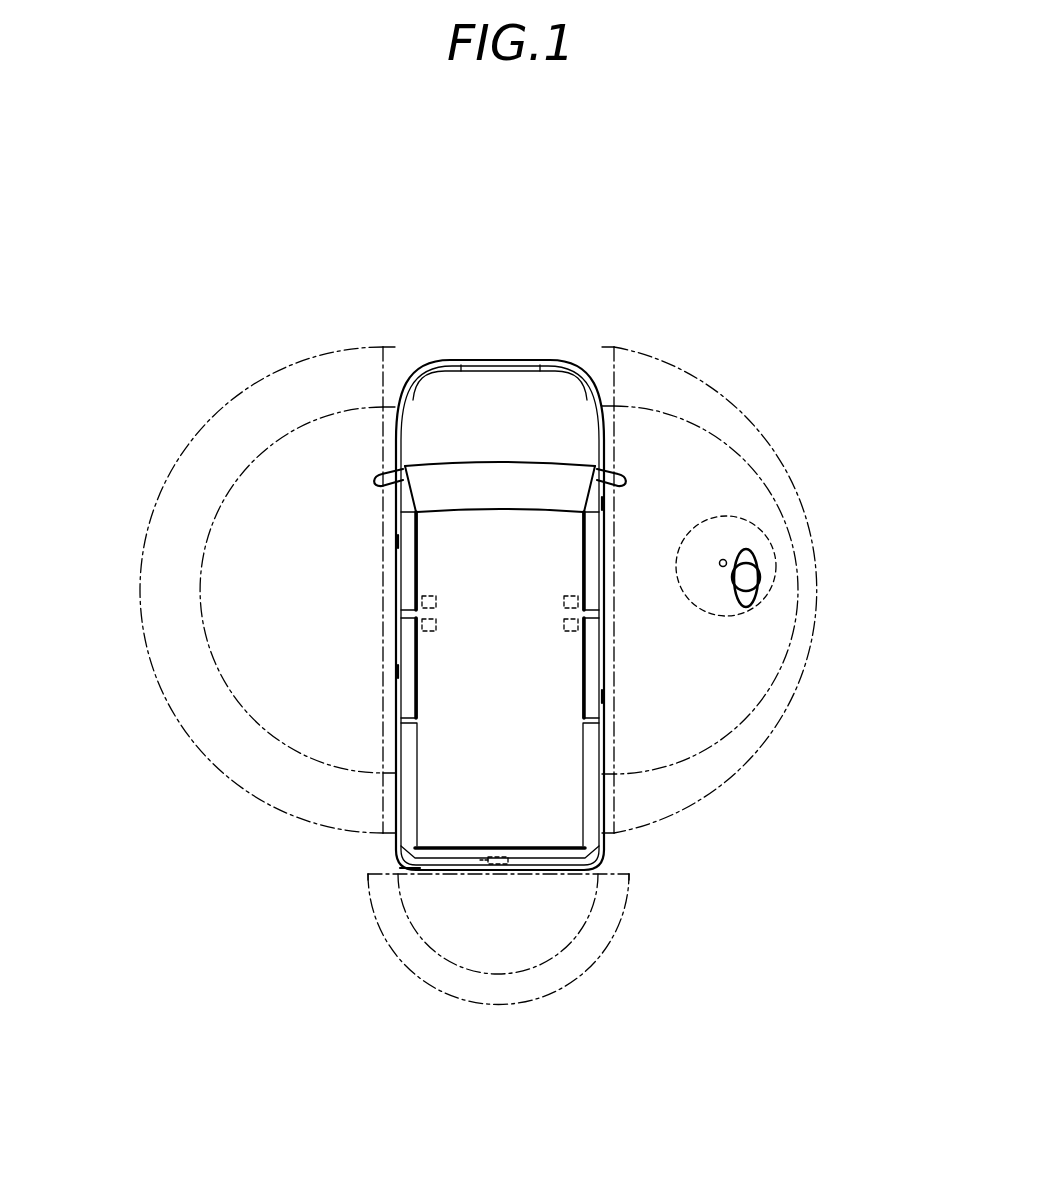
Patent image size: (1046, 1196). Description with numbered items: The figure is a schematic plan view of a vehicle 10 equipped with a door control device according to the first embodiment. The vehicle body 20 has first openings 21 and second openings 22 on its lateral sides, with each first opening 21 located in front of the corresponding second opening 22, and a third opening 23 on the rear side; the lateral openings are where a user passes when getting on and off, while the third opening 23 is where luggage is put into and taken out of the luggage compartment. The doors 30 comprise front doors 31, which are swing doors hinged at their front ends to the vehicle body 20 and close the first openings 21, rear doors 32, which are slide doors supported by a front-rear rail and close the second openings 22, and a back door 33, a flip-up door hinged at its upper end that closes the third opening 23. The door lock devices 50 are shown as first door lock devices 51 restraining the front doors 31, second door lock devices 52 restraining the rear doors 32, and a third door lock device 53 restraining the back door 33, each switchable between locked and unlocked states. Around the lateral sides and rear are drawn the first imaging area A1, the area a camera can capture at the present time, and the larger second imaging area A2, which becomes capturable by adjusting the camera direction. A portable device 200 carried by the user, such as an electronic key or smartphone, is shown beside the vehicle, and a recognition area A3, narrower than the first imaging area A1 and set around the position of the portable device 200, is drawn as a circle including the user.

The vehicle 10 is at (650, 581).
The vehicle body 20 is at (525, 360).
The first openings 21 is at (414, 557).
The second openings 22 is at (414, 659).
The third opening 23 is at (586, 848).
The doors 30 is at (462, 702).
The front doors 31 is at (399, 543).
The rear doors 32 is at (398, 672).
The back door 33 is at (408, 906).
The door lock devices 50 is at (456, 746).
The first door lock devices 51 is at (422, 602).
The second door lock devices 52 is at (422, 627).
The third door lock device 53 is at (489, 874).
The portable device 200 is at (722, 559).
The first imaging area A1 is at (203, 630).
The second imaging area A2 is at (140, 597).
The recognition area A3 is at (716, 617).